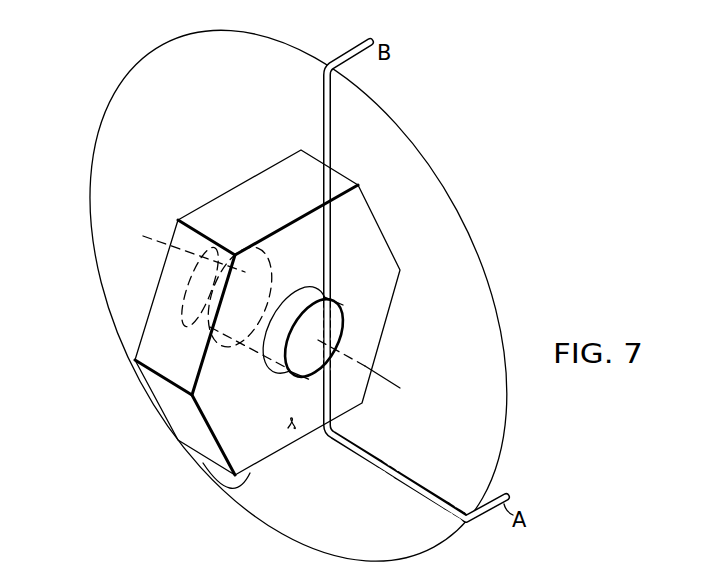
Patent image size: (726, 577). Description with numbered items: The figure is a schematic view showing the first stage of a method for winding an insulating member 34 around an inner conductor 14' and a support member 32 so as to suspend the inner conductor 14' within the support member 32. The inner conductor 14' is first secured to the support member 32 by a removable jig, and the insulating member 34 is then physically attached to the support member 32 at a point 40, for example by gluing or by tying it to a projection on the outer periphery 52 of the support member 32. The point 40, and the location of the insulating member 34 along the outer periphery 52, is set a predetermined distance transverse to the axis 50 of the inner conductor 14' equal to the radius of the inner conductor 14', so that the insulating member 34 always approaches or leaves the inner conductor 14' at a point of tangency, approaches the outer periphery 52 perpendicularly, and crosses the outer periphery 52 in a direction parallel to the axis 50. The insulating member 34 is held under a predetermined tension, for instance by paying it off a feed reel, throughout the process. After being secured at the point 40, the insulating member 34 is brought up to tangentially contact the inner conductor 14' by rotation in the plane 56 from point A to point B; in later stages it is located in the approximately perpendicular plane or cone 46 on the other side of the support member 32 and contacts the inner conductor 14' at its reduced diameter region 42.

The inner conductor 14' is at (303, 330).
The support member 32 is at (230, 488).
The insulating member 34 is at (366, 48).
The point 40 is at (290, 426).
The reduced diameter region 42 is at (294, 290).
The perpendicular plane or cone 46 is at (270, 167).
The axis 50 is at (396, 381).
The outer periphery 52 is at (224, 224).
The plane 56 is at (393, 124).